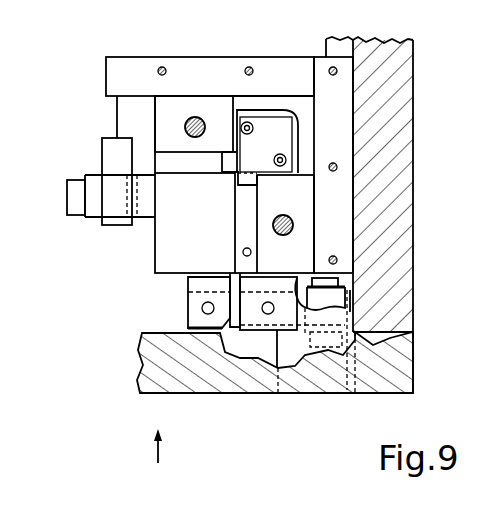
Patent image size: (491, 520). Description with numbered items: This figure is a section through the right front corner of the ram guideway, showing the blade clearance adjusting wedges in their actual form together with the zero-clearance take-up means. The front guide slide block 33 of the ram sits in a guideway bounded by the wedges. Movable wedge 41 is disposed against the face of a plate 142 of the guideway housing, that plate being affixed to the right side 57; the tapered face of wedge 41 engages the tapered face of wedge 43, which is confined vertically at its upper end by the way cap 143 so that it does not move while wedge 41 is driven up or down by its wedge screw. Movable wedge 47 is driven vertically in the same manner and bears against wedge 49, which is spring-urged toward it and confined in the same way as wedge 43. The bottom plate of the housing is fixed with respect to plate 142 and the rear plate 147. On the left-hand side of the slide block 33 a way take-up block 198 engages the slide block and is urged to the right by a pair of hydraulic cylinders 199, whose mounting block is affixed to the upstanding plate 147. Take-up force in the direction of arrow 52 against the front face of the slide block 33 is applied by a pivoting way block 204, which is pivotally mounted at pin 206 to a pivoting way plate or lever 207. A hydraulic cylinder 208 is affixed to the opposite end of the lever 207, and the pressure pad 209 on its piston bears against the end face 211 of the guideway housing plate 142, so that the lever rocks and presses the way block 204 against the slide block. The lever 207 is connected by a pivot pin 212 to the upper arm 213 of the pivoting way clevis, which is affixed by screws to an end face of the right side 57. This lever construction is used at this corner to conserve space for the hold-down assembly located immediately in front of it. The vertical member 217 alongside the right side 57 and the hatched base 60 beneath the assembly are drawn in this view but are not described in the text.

The rear plate 147 is at (204, 58).
The movable wedge 47 is at (224, 103).
The vertical bar 217 is at (305, 110).
The right side 57 is at (400, 142).
The plate of the guideway housing 142 is at (340, 218).
The end face 211 is at (303, 272).
The way cap 143 is at (273, 153).
The wedge 49 is at (170, 158).
The way take-up block 198 is at (148, 209).
The hydraulic cylinders 199 is at (72, 200).
The front guide slide block 33 is at (208, 253).
The wedge 41 is at (305, 193).
The wedge 43 is at (247, 230).
The pivoting way block 204 is at (200, 282).
The pin 206 is at (203, 308).
The pivot pin 212 is at (268, 314).
The upper arm 213 is at (287, 315).
The pressure pad 209 is at (325, 284).
The hydraulic cylinder 208 is at (333, 297).
The base 60 is at (231, 382).
The pivoting way plate or lever 207 is at (230, 326).
The arrow 52 is at (173, 451).